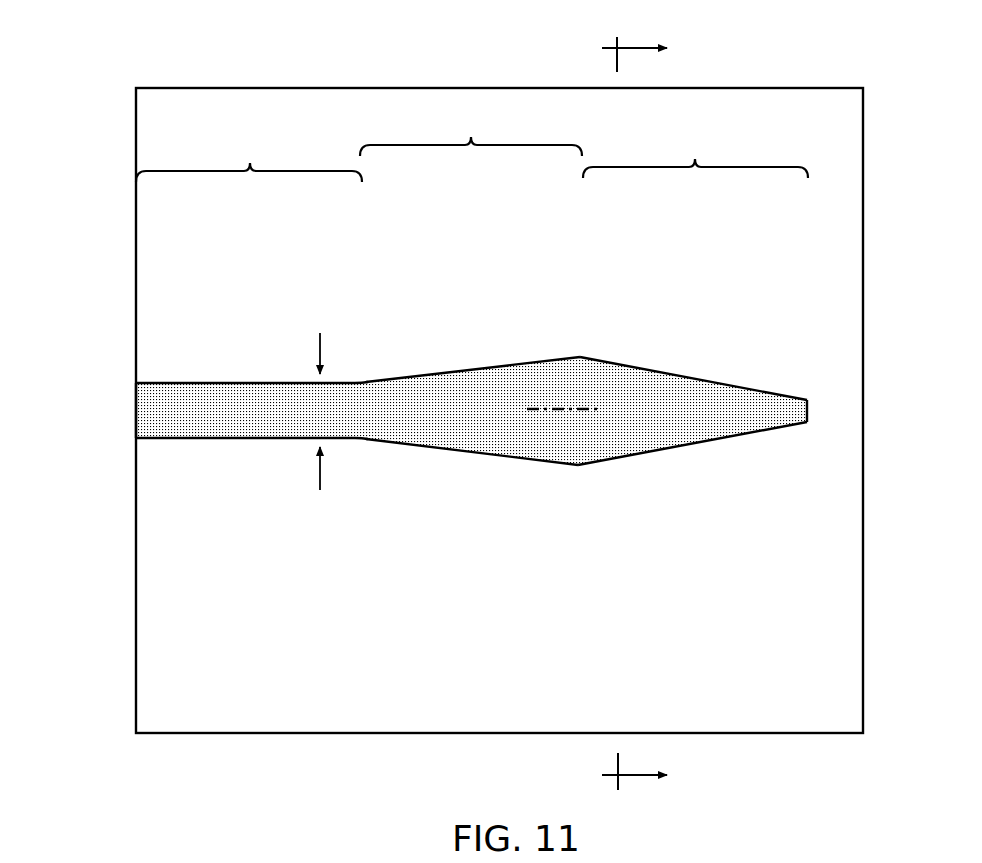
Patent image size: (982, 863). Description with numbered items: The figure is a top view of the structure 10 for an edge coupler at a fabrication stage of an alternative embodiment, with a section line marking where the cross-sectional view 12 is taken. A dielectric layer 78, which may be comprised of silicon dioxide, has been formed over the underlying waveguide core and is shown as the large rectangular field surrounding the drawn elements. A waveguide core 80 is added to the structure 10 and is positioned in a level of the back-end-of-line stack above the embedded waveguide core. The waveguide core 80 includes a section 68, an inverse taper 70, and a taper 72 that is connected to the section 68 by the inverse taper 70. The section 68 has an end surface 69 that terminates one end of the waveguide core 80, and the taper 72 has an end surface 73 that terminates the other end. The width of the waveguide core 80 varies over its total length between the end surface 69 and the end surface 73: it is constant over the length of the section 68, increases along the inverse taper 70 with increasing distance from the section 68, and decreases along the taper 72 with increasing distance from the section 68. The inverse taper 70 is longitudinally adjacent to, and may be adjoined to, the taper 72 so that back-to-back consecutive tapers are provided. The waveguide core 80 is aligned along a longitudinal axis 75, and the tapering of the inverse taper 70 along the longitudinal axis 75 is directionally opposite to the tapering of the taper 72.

The structure 10 is at (113, 66).
The waveguide core 12 is at (662, 413).
The section 68 is at (258, 412).
The end surface 69 is at (136, 412).
The inverse taper 70 is at (472, 430).
The taper 72 is at (699, 424).
The end surface 73 is at (807, 411).
The longitudinal axis 75 is at (562, 407).
The dielectric layer 78 is at (203, 658).
The waveguide core 80 is at (458, 278).